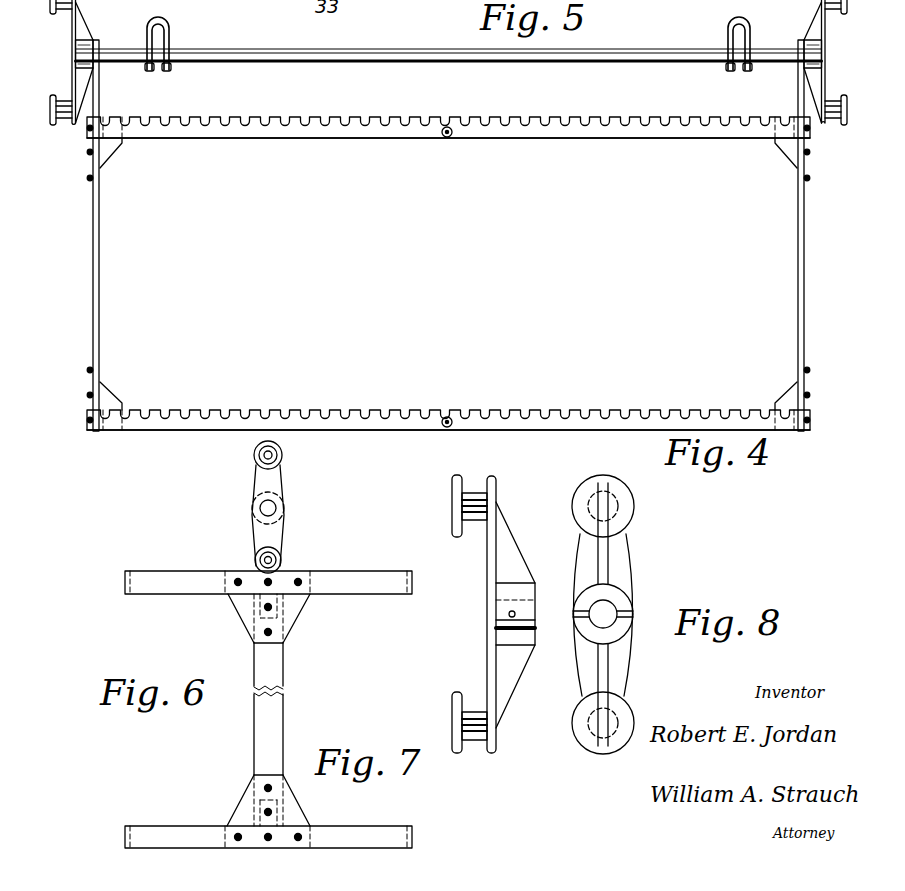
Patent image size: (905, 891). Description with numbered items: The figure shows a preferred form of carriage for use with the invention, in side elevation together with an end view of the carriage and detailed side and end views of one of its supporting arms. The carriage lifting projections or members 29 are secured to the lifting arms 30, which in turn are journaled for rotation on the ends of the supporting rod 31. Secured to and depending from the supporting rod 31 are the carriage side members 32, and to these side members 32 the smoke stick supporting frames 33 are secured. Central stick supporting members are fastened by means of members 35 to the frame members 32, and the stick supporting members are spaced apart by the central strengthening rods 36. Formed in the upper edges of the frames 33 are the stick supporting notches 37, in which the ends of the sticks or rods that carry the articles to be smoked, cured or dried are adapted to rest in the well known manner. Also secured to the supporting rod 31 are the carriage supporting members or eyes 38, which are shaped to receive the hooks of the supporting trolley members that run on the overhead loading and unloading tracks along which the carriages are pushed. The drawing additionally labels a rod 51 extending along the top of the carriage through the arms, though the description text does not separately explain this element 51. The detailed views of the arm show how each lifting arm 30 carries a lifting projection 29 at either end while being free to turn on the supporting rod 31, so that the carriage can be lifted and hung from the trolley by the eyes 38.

In FIG. 4, the carriage lifting projections 29 is at (62, 128).
In FIG. 6, the carriage lifting projections 29 is at (268, 507).
In FIG. 7, the carriage lifting projections 29 is at (470, 493).
In FIG. 8, the carriage lifting projections 29 is at (618, 510).
In FIG. 4, the lifting arms 30 is at (78, 33).
In FIG. 6, the lifting arms 30 is at (258, 492).
In FIG. 7, the lifting arms 30 is at (487, 577).
In FIG. 8, the lifting arms 30 is at (620, 592).
In FIG. 6, the supporting rod 31 is at (282, 508).
In FIG. 4, the carriage side members 32 is at (100, 95).
In FIG. 6, the carriage side members 32 is at (284, 672).
In FIG. 4, the smoke stick supporting frames 33 is at (400, 136).
In FIG. 6, the smoke stick supporting frames 33 is at (342, 580).
In FIG. 4, the fastening members 35 is at (118, 148).
In FIG. 4, the central strengthening rods 36 is at (456, 135).
In FIG. 4, the stick supporting notches 37 is at (302, 118).
In FIG. 4, the carriage supporting members or eyes 38 is at (173, 32).
In FIG. 4, the rod 51 is at (262, 52).